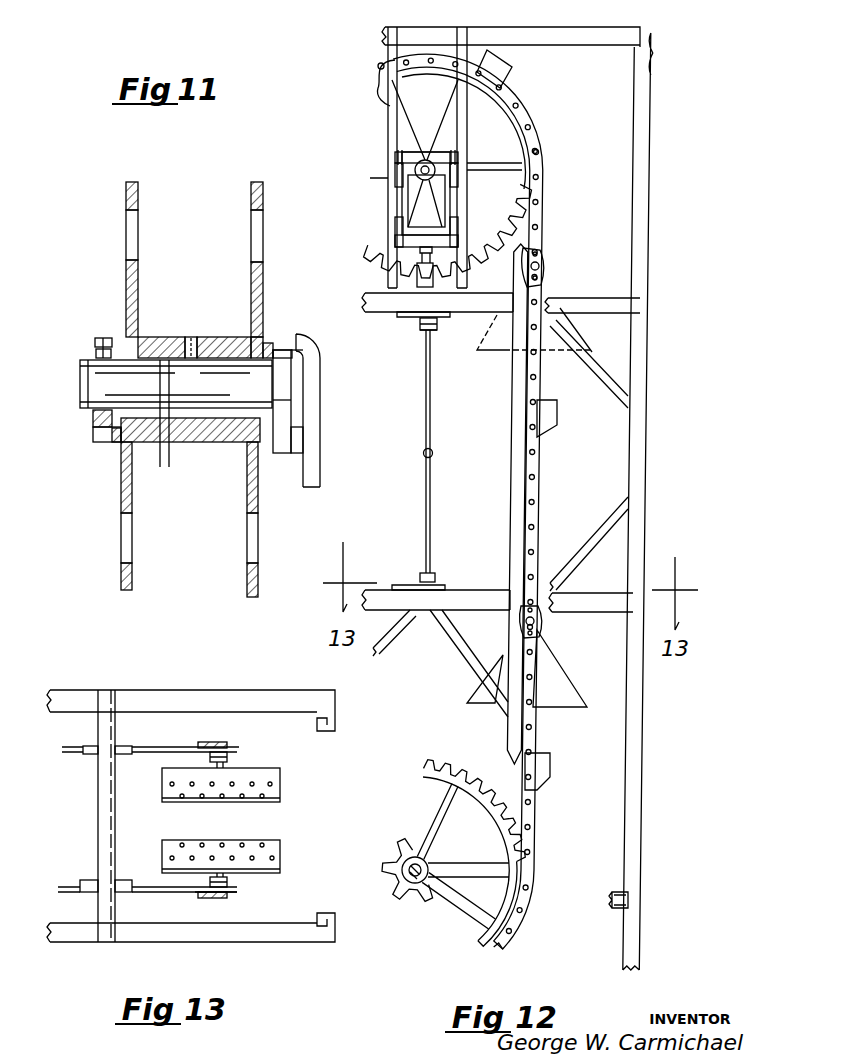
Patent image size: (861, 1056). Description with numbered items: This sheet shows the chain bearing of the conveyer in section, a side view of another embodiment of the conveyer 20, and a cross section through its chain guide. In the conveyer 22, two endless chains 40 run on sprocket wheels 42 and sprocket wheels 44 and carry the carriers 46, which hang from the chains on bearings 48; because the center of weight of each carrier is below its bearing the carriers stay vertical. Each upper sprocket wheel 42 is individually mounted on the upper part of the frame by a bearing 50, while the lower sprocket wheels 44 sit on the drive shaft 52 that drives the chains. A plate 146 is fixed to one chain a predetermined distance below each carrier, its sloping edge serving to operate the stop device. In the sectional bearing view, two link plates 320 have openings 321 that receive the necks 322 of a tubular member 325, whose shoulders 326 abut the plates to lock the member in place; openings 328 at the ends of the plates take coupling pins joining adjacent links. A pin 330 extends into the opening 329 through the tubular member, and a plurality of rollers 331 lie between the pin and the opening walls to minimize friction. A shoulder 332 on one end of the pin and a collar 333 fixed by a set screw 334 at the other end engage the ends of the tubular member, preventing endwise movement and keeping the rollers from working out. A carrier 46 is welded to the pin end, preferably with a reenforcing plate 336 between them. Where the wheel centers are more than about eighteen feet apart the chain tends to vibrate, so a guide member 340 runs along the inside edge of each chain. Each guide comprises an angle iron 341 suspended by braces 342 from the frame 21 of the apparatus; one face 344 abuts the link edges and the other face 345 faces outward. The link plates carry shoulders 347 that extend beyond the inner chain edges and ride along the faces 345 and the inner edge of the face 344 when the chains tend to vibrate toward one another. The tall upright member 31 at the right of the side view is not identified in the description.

In FIG. 12, the conveyer 20 is at (429, 978).
In FIG. 12, the frame 21 is at (418, 302).
In FIG. 12, the conveyer 22 is at (535, 135).
In FIG. 12, the column 31 is at (634, 763).
In FIG. 12, the endless chain 40 is at (527, 903).
In FIG. 12, the sprocket wheel 42 is at (386, 102).
In FIG. 12, the sprocket wheel 44 is at (447, 807).
In FIG. 11, the carrier 46 is at (317, 402).
In FIG. 13, the carrier 46 is at (268, 795).
In FIG. 12, the carrier 46 is at (574, 330).
In FIG. 11, the bearing 48 is at (206, 523).
In FIG. 12, the bearing 48 is at (545, 268).
In FIG. 12, the bearing 50 is at (425, 172).
In FIG. 12, the drive shaft 52 is at (410, 868).
In FIG. 12, the plate 146 is at (548, 774).
In FIG. 11, the link plate 320 is at (252, 193).
In FIG. 12, the link plate 320 is at (538, 256).
In FIG. 11, the opening 321 is at (262, 345).
In FIG. 11, the neck 322 is at (270, 353).
In FIG. 11, the tubular member 325 is at (192, 427).
In FIG. 11, the shoulder 326 is at (137, 343).
In FIG. 11, the opening 328 is at (254, 235).
In FIG. 11, the opening 329 is at (208, 347).
In FIG. 11, the pin 330 is at (250, 383).
In FIG. 11, the roller 331 is at (159, 426).
In FIG. 11, the shoulder 332 is at (283, 388).
In FIG. 11, the collar 333 is at (93, 418).
In FIG. 11, the set screw 334 is at (105, 340).
In FIG. 11, the reenforcing plate 336 is at (295, 433).
In FIG. 13, the guide member 340 is at (97, 878).
In FIG. 12, the guide member 340 is at (514, 445).
In FIG. 13, the angle iron 341 is at (197, 745).
In FIG. 12, the angle iron 341 is at (518, 490).
In FIG. 13, the brace 342 is at (78, 750).
In FIG. 12, the brace 342 is at (481, 303).
In FIG. 13, the face 344 is at (228, 752).
In FIG. 12, the face 344 is at (538, 477).
In FIG. 13, the face 345 is at (202, 896).
In FIG. 12, the face 345 is at (510, 725).
In FIG. 13, the shoulder 347 is at (205, 742).
In FIG. 12, the shoulder 347 is at (520, 620).